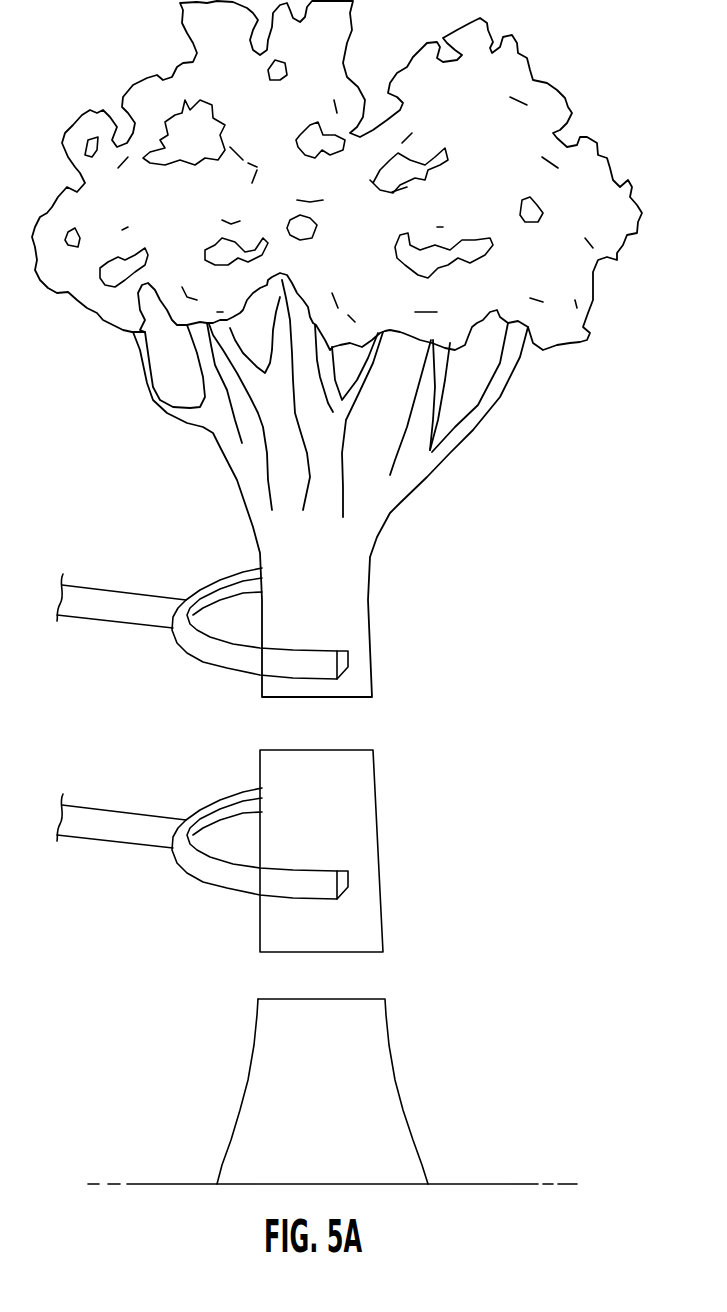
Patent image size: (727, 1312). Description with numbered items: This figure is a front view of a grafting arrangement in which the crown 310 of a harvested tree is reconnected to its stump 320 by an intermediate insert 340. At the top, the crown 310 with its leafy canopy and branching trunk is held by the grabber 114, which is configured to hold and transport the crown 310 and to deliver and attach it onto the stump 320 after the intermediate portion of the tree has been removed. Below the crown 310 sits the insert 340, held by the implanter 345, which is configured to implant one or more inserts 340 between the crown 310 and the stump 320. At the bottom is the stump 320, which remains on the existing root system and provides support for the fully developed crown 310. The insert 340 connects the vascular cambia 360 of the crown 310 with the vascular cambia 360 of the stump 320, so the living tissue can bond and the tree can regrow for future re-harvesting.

The crown 310 is at (568, 58).
The grabber 114 is at (132, 583).
The implanter 345 is at (132, 803).
The insert 340 is at (387, 791).
The stump 320 is at (419, 1114).
The vascular cambia 360 is at (284, 710).